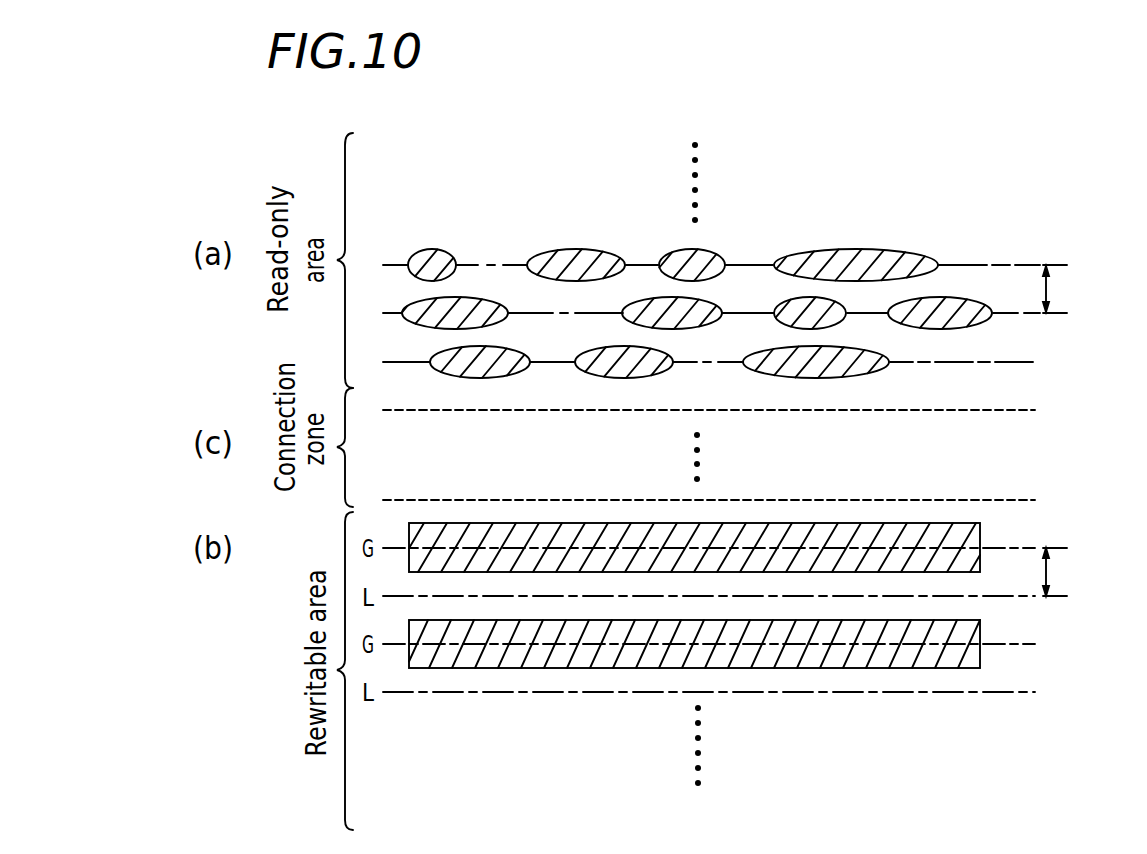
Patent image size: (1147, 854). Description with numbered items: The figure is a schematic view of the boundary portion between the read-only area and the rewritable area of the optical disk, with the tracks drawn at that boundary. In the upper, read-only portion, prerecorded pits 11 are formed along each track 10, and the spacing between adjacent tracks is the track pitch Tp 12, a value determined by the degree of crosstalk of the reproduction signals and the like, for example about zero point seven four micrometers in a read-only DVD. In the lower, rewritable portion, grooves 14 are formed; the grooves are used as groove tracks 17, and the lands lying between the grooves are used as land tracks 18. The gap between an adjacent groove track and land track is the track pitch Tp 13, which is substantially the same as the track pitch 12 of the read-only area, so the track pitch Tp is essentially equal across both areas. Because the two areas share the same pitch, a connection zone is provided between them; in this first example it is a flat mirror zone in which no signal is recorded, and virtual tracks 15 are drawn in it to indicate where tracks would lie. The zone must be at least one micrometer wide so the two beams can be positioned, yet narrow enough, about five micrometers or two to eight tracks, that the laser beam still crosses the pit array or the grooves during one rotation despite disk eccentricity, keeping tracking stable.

The track 10 is at (962, 265).
The prerecorded pits 11 is at (869, 250).
The track pitch Tp 12 is at (1061, 262).
The track pitch Tp 13 is at (1092, 554).
The grooves 14 is at (838, 523).
The virtual tracks 15 is at (995, 410).
The groove tracks 17 is at (1010, 547).
The land tracks 18 is at (1007, 597).
The track pitch Tp is at (1050, 289).